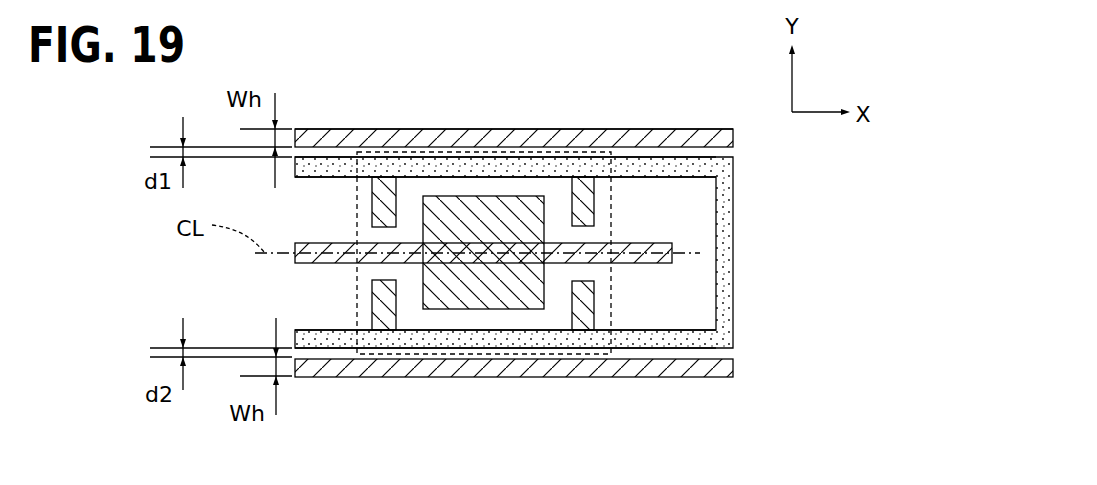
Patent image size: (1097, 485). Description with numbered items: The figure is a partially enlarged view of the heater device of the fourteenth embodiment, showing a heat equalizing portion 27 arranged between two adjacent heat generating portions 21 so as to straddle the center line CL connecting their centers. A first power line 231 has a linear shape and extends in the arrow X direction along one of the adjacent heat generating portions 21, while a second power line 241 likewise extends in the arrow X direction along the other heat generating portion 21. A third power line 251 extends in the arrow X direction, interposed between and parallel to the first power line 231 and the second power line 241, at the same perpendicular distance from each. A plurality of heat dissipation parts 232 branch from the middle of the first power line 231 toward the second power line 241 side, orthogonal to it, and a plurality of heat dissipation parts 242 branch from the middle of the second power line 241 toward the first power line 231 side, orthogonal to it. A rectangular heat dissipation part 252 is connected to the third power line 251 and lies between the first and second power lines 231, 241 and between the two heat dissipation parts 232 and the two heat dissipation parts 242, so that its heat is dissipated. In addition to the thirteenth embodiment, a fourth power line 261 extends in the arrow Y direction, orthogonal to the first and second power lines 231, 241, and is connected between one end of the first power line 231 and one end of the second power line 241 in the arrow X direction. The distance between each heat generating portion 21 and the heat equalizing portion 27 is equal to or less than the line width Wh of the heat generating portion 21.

The heat generating portion 21 is at (458, 129).
The heat equalizing portion 27 is at (393, 129).
The fourth power line 261 is at (733, 168).
The second power line 241 is at (670, 177).
The heat dissipation part 242 is at (595, 205).
The third power line 251 is at (657, 245).
The heat dissipation part 252 is at (544, 273).
The heat dissipation part 232 is at (595, 292).
The first power line 231 is at (675, 330).